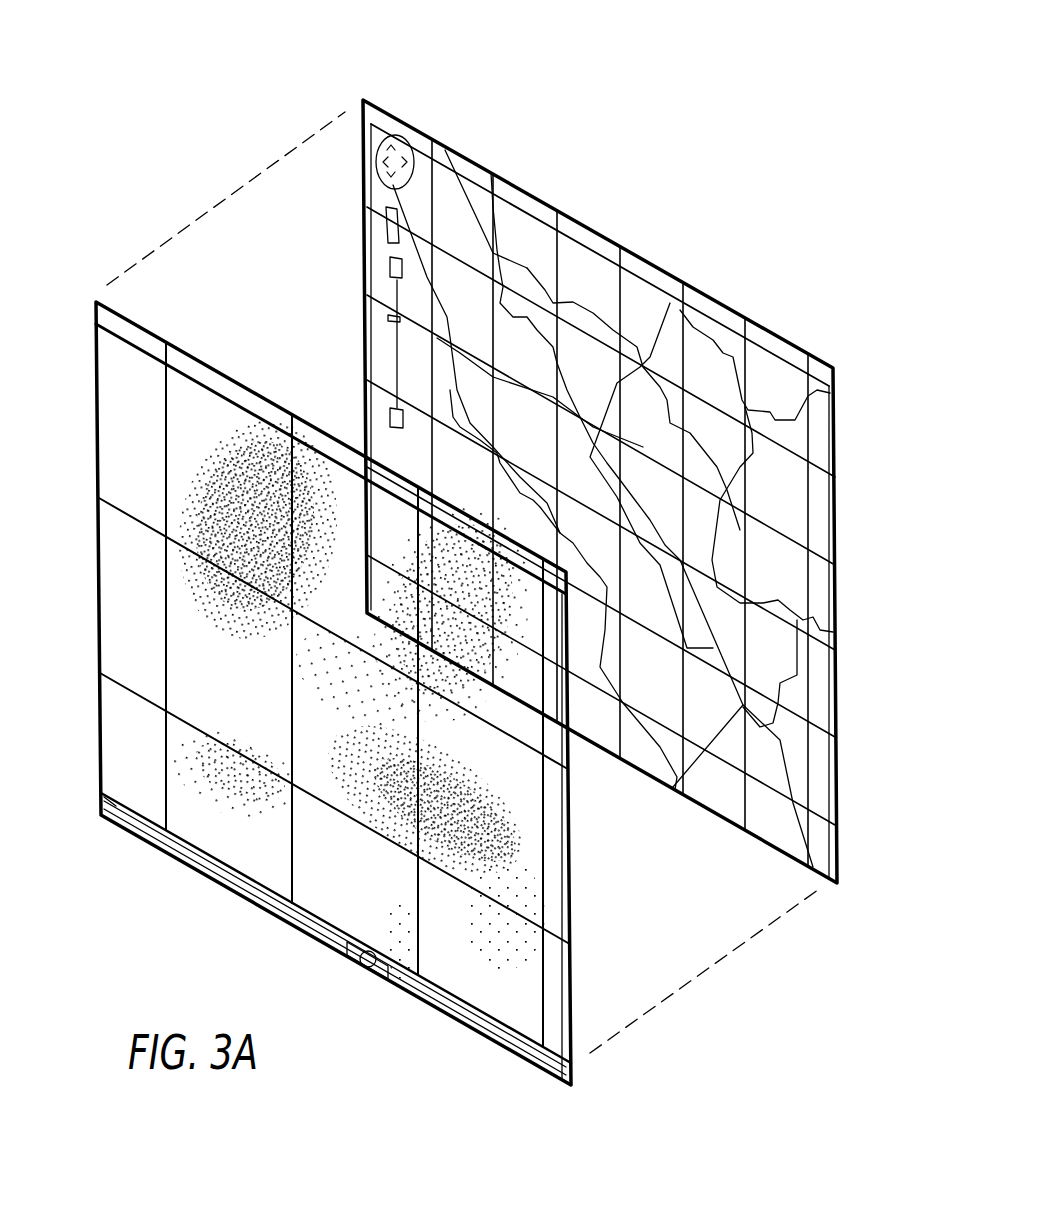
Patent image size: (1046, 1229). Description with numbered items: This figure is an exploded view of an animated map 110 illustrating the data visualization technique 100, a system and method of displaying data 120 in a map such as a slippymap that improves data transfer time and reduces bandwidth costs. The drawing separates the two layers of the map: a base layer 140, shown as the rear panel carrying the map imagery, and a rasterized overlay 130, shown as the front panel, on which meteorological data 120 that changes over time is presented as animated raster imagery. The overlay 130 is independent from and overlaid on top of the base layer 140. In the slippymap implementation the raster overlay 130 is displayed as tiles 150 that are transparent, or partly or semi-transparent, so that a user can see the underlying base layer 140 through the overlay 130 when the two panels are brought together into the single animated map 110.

The data visualization technique 100 is at (212, 100).
The animated map 110 is at (594, 212).
The data 120 is at (228, 622).
The overlay 130 is at (70, 508).
The base layer 140 is at (848, 612).
The tiles 150 is at (148, 716).